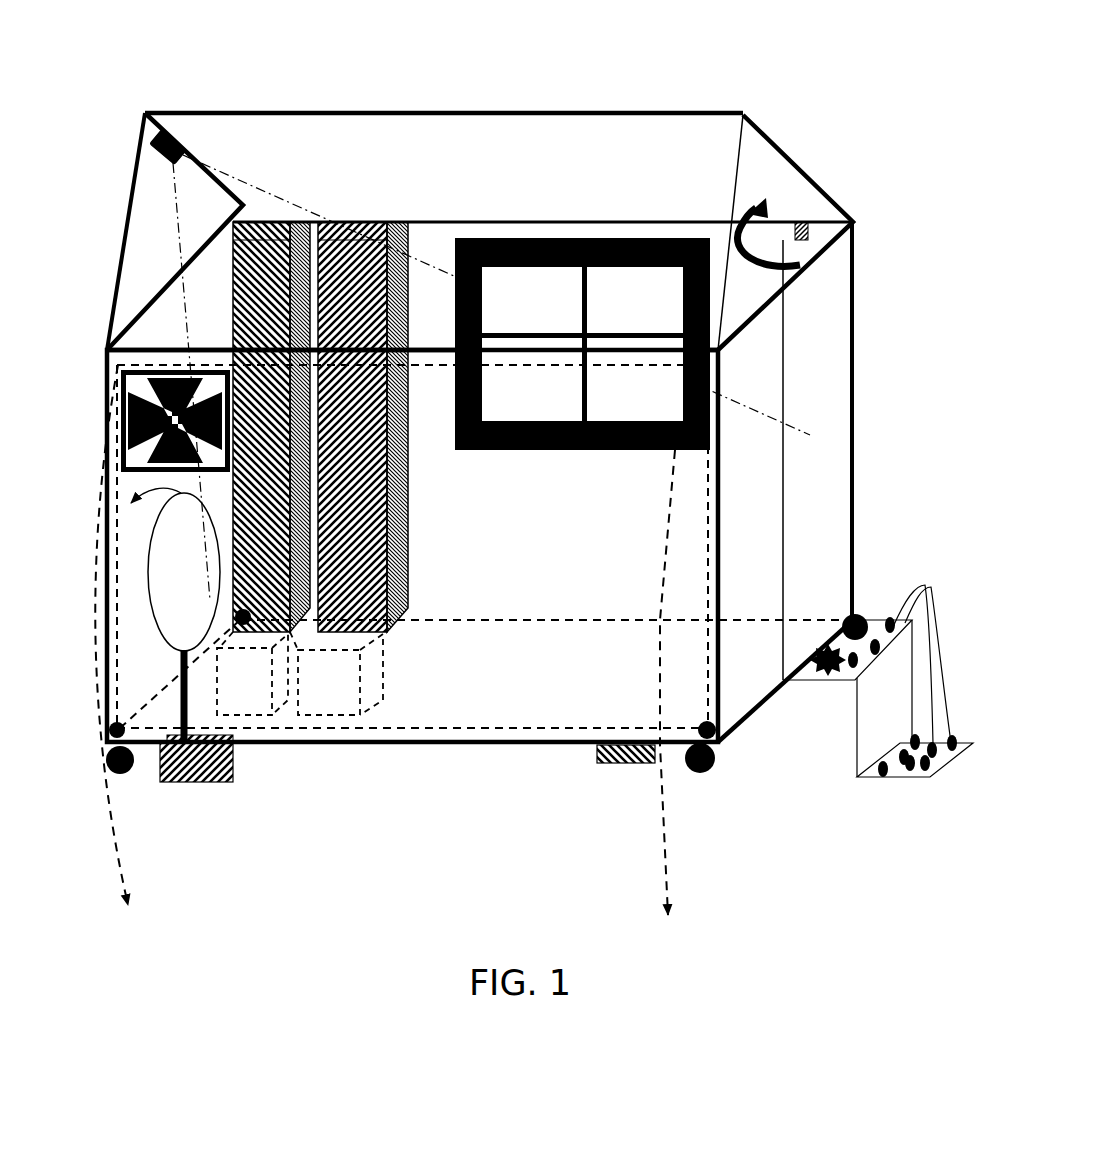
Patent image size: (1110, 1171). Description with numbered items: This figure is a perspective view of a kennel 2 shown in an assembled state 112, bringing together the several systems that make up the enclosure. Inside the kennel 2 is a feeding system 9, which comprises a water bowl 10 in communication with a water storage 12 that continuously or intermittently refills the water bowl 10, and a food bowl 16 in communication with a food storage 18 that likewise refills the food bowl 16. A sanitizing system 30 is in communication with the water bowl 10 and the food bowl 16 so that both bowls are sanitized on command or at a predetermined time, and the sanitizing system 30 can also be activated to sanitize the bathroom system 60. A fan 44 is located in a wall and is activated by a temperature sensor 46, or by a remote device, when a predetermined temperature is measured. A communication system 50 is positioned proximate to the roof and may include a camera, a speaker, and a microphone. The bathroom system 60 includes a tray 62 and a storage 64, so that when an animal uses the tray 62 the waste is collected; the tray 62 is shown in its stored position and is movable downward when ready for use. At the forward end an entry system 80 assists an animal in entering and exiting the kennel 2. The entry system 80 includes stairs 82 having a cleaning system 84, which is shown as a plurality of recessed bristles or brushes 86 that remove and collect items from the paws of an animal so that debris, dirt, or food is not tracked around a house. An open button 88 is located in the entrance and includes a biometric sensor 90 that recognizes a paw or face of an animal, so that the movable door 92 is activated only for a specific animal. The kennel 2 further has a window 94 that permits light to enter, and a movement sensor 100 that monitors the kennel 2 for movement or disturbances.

The kennel 2 is at (658, 68).
The assembled state 112 is at (753, 73).
The communication system 50 is at (186, 128).
The water storage 12 is at (272, 222).
The food storage 18 is at (372, 222).
The window 94 is at (614, 240).
The temperature sensor 46 is at (815, 222).
The fan 44 is at (132, 380).
The movable door 92 is at (853, 356).
The bathroom system 60 is at (93, 483).
The tray 62 is at (162, 615).
The storage 64 is at (239, 783).
The water bowl 10 is at (257, 673).
The food bowl 16 is at (340, 674).
The feeding system 9 is at (440, 573).
The sanitizing system 30 is at (400, 690).
The movement sensor 100 is at (594, 767).
The entry system 80 is at (887, 595).
The recessed bristles or brushes 86 is at (922, 649).
The open button 88 is at (786, 692).
The biometric sensor 90 is at (826, 674).
The stairs 82 is at (823, 758).
The cleaning system 84 is at (880, 781).